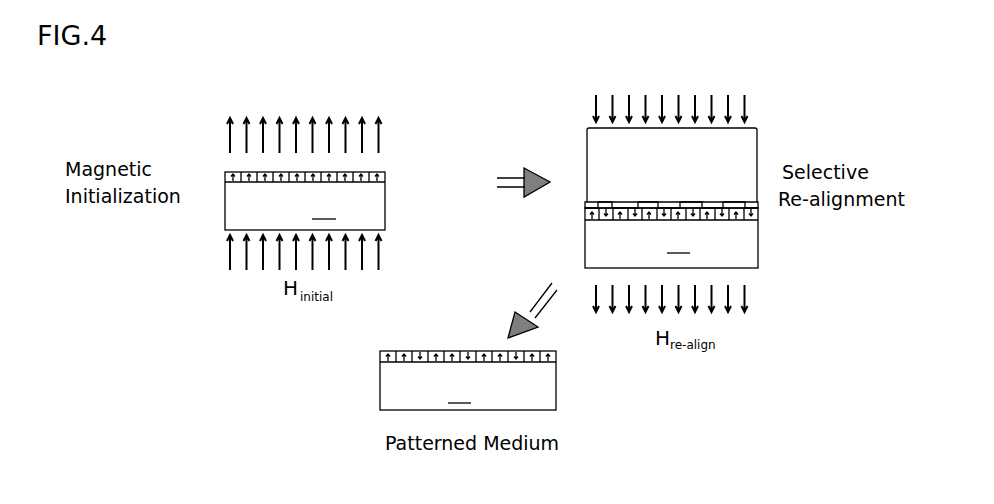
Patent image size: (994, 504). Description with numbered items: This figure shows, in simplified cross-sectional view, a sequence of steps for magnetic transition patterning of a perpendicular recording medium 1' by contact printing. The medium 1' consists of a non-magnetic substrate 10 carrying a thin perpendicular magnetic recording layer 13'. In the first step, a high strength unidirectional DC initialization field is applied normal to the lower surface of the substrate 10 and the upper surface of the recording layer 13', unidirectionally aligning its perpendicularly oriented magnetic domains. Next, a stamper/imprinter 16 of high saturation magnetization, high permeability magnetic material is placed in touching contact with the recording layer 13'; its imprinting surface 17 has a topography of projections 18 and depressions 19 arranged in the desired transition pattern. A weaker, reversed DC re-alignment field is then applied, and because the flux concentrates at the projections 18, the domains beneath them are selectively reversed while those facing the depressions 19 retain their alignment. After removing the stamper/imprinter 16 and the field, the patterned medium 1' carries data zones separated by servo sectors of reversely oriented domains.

The perpendicular recording medium 1' is at (266, 314).
The non-magnetic substrate 10 is at (491, 291).
The magnetic recording layer 13' is at (524, 268).
The stamper/imprinter 16 is at (770, 138).
The imprinting surface 17 is at (587, 203).
The projections 18 is at (606, 204).
The depressions 19 is at (627, 202).